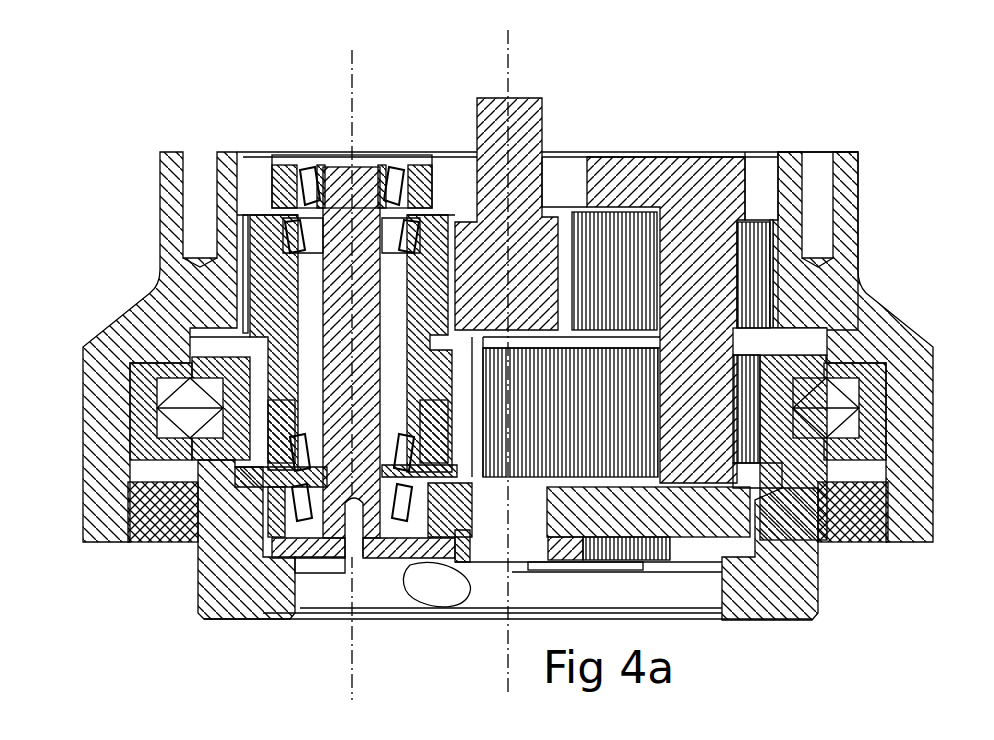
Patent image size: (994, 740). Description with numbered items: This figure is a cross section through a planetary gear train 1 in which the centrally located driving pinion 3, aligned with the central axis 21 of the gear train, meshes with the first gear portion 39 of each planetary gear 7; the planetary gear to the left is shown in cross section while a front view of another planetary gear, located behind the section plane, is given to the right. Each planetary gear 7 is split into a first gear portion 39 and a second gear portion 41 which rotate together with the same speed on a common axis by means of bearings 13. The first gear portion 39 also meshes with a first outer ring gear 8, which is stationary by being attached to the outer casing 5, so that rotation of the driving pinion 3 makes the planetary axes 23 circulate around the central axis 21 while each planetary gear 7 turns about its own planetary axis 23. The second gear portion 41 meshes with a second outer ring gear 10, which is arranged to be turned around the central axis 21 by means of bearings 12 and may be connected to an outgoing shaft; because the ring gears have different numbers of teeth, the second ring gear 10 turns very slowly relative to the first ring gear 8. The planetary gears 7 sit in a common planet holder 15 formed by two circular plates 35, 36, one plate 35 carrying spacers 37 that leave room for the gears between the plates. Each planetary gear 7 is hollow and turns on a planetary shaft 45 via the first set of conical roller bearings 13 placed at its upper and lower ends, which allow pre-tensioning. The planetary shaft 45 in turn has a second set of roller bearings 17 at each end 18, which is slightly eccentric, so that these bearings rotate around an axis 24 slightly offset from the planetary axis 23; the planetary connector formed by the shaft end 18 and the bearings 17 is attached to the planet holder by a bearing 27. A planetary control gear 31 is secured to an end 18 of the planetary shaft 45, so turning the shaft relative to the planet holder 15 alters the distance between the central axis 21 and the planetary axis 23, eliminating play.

The drive unit 1 is at (78, 170).
The driving pinion 3 is at (533, 135).
The outer casing 5 is at (122, 333).
The planetary gear 7 is at (790, 330).
The first outer ring gear 8 is at (240, 290).
The second outer ring gear 10 is at (207, 485).
The bearings 12 is at (183, 405).
The first set of bearings 13 is at (420, 215).
The planet holder 15 is at (693, 162).
The roller bearings 17 is at (413, 173).
The end of planetary shaft 18 is at (343, 173).
The central axis 21 is at (510, 57).
The planetary axis 23 is at (352, 90).
The axis 24 is at (353, 680).
The bearing 27 is at (398, 170).
The planetary control gear 31 is at (313, 548).
The circular plate 35 is at (638, 165).
The circular plate 36 is at (688, 513).
The spacers 37 is at (650, 345).
The first gear portion 39 is at (240, 253).
The second gear portion 41 is at (215, 440).
The planetary shaft 45 is at (217, 253).